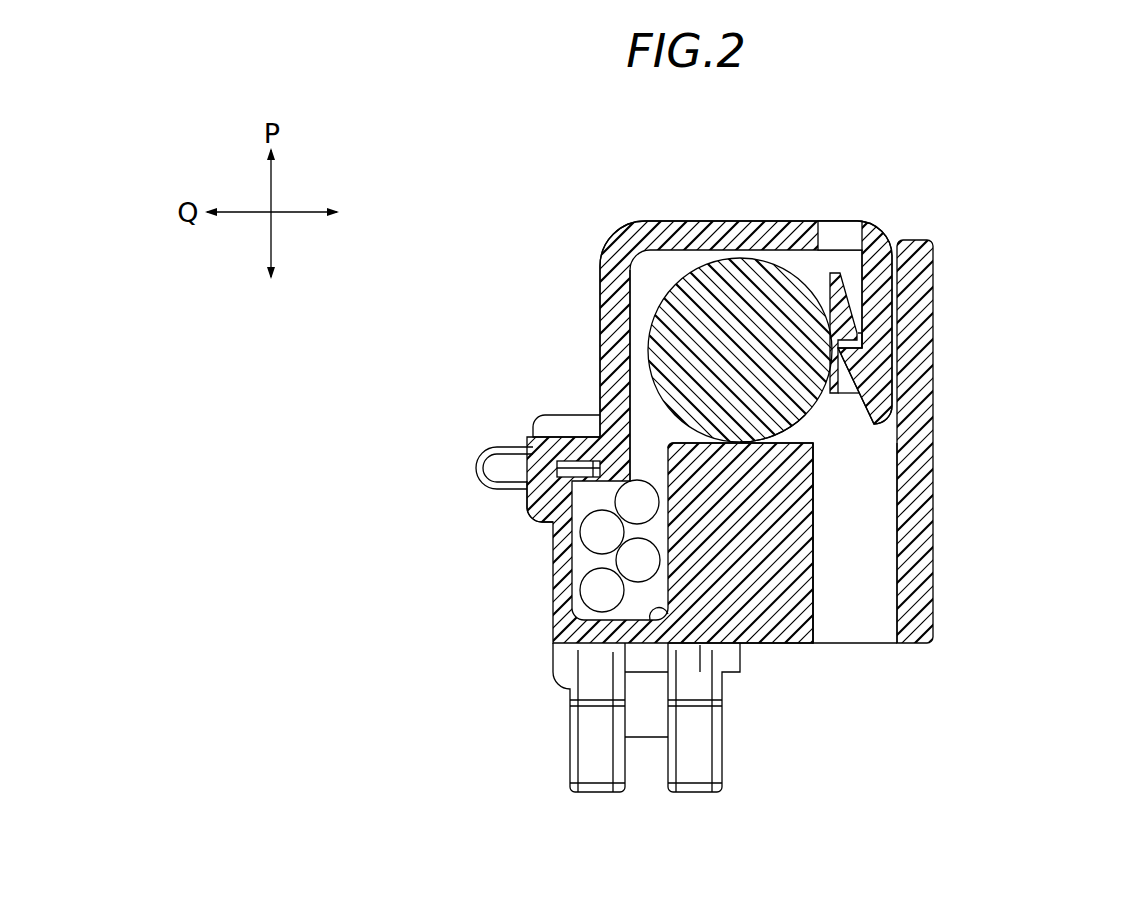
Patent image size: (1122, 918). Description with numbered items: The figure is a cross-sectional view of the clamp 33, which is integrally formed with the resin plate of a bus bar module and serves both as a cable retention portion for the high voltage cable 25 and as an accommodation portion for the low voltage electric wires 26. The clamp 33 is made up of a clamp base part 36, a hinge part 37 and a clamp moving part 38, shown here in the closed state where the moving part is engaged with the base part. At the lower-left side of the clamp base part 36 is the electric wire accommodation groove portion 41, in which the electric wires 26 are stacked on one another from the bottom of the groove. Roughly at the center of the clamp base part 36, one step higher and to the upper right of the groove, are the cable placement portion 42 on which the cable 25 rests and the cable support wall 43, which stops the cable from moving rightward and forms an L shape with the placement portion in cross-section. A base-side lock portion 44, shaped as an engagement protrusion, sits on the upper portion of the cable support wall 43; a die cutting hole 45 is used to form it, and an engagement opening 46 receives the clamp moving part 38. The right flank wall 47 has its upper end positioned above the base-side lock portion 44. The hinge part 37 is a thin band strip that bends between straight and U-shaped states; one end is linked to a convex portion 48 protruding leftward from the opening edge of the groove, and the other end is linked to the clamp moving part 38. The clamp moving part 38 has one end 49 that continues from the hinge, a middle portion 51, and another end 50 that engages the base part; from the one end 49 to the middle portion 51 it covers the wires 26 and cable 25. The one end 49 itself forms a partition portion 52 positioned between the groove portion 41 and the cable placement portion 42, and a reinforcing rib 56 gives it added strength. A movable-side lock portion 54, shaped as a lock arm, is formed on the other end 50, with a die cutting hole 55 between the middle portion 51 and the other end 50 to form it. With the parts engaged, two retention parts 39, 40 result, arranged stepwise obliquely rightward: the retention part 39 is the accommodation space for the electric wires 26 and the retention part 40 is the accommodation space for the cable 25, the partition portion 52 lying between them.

The high voltage cable 25 is at (705, 283).
The low voltage electric wire 26 is at (593, 592).
The clamp 33 is at (504, 208).
The clamp base part 36 is at (781, 644).
The hinge part 37 is at (493, 447).
The clamp moving part 38 is at (757, 221).
The retention part 39 is at (643, 613).
The retention part 40 is at (643, 283).
The electric wire accommodation groove portion 41 is at (665, 618).
The cable placement portion 42 is at (770, 411).
The cable support wall 43 is at (797, 280).
The base-side lock portion 44 is at (843, 310).
The die cutting hole 45 is at (865, 628).
The engagement opening 46 is at (850, 283).
The right flank wall 47 is at (917, 558).
The convex portion 48 is at (537, 508).
The one end 49 is at (593, 414).
The other end 50 is at (877, 402).
The middle portion 51 is at (633, 225).
The partition portion 52 is at (583, 452).
The movable-side lock portion 54 is at (862, 375).
The die cutting hole 55 is at (837, 232).
The reinforcing rib 56 is at (556, 414).